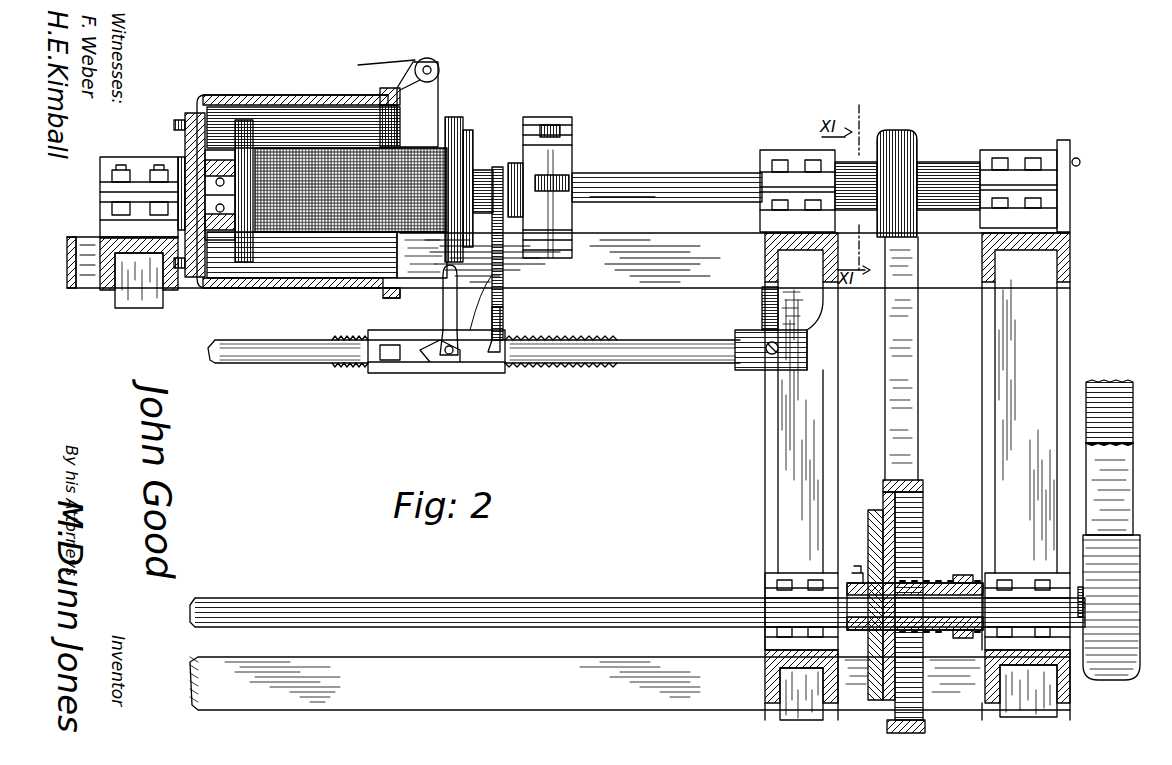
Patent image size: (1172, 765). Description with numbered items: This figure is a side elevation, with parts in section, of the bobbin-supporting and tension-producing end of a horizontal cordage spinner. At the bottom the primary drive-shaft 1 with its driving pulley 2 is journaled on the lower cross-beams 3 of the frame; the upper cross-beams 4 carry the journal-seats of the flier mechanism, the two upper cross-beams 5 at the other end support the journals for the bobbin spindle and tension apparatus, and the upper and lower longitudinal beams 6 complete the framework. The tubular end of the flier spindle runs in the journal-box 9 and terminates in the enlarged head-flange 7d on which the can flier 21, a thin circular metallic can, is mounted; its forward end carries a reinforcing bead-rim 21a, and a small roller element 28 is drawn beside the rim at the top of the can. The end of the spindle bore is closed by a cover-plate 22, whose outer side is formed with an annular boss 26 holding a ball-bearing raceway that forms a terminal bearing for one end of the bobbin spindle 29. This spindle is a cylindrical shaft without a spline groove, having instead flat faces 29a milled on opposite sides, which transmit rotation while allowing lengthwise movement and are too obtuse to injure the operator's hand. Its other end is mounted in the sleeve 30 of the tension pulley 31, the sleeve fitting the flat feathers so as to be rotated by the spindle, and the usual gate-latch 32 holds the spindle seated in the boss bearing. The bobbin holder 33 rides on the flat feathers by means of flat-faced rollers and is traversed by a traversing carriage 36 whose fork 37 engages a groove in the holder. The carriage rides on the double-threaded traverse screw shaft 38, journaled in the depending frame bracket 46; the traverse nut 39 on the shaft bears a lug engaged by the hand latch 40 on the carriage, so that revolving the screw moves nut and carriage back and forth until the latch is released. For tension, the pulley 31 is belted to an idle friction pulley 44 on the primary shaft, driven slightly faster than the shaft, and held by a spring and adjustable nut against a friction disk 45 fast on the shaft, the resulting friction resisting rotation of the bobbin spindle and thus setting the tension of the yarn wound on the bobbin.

The primary drive-shaft 1 is at (550, 600).
The driving pulley 2 is at (1140, 622).
The lower cross-beams 3 is at (765, 700).
The upper cross-beams 4 is at (147, 252).
The upper cross-beams 5 is at (800, 250).
The longitudinal beams 6 is at (568, 260).
The head-flange 7d is at (183, 132).
The journal-box 9 is at (115, 165).
The can flier 21 is at (278, 96).
The bead-rim 21a is at (392, 86).
The cover-plate 22 is at (178, 222).
The annular boss 26 is at (230, 212).
The roller 28 is at (434, 62).
The bobbin spindle 29 is at (650, 174).
The flat faces 29a is at (610, 190).
The sleeve 30 is at (945, 165).
The tension pulley 31 is at (918, 132).
The gate-latch 32 is at (1065, 156).
The bobbin holder 33 is at (538, 118).
The traversing carriage 36 is at (500, 322).
The fork 37 is at (497, 167).
The traverse screw shaft 38 is at (650, 364).
The traverse nut 39 is at (388, 373).
The hand latch 40 is at (443, 308).
The friction pulley 44 is at (925, 728).
The friction disk 45 is at (868, 700).
The frame bracket 46 is at (765, 312).